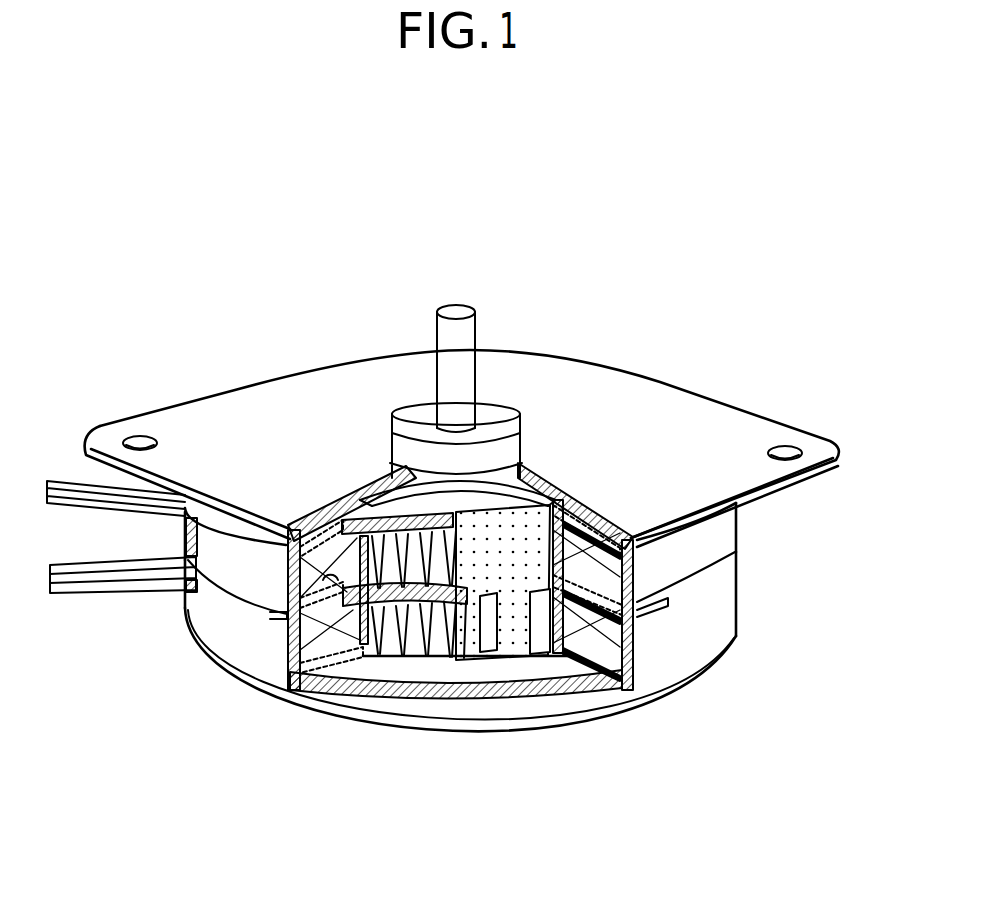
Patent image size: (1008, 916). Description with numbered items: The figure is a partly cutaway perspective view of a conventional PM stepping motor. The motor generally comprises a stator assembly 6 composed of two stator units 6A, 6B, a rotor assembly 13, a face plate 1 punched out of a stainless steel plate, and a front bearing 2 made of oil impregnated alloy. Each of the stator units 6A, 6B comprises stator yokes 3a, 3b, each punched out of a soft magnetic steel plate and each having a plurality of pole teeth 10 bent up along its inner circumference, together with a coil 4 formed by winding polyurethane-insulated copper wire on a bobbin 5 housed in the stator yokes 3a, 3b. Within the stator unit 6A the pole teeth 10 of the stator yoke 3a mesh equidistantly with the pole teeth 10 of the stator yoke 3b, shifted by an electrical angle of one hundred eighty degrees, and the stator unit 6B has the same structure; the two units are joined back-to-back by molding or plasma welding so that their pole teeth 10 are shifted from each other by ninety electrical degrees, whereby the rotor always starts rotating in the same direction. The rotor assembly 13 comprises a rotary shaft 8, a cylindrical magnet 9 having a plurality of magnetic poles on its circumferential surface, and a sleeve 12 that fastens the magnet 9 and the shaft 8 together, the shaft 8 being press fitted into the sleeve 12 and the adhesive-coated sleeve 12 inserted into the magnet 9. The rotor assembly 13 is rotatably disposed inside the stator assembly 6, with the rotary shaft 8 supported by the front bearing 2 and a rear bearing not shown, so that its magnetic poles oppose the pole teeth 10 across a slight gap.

The face plate 1 is at (650, 400).
The front bearing 2 is at (507, 417).
The stator yoke 3a is at (372, 495).
The stator yoke 3b is at (365, 540).
The coil 4 is at (613, 578).
The bobbin 5 is at (328, 620).
The stator assembly 6 is at (474, 606).
The stator unit 6A is at (764, 526).
The stator unit 6B is at (513, 641).
The rotary shaft 8 is at (456, 341).
The cylindrical magnet 9 is at (470, 500).
The pole teeth 10 is at (456, 650).
The sleeve 12 is at (438, 492).
The rotor assembly 13 is at (448, 343).